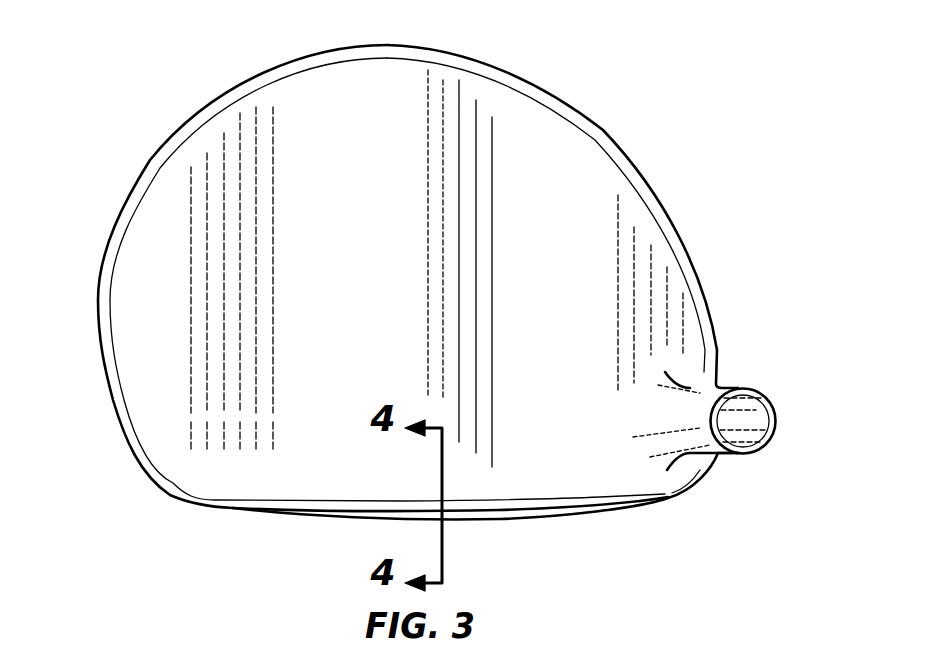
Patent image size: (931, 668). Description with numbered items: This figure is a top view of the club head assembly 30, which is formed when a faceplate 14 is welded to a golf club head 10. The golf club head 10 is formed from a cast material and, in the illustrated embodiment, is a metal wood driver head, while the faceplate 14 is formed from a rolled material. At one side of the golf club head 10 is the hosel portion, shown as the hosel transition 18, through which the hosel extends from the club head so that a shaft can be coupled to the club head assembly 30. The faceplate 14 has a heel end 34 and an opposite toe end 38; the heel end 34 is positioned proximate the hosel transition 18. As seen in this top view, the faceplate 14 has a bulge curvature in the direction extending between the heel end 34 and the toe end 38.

The club head assembly 30 is at (118, 83).
The golf club head 10 is at (262, 80).
The hosel transition 18 is at (757, 427).
The faceplate 14 is at (312, 533).
The toe end 38 is at (233, 508).
The heel end 34 is at (640, 508).